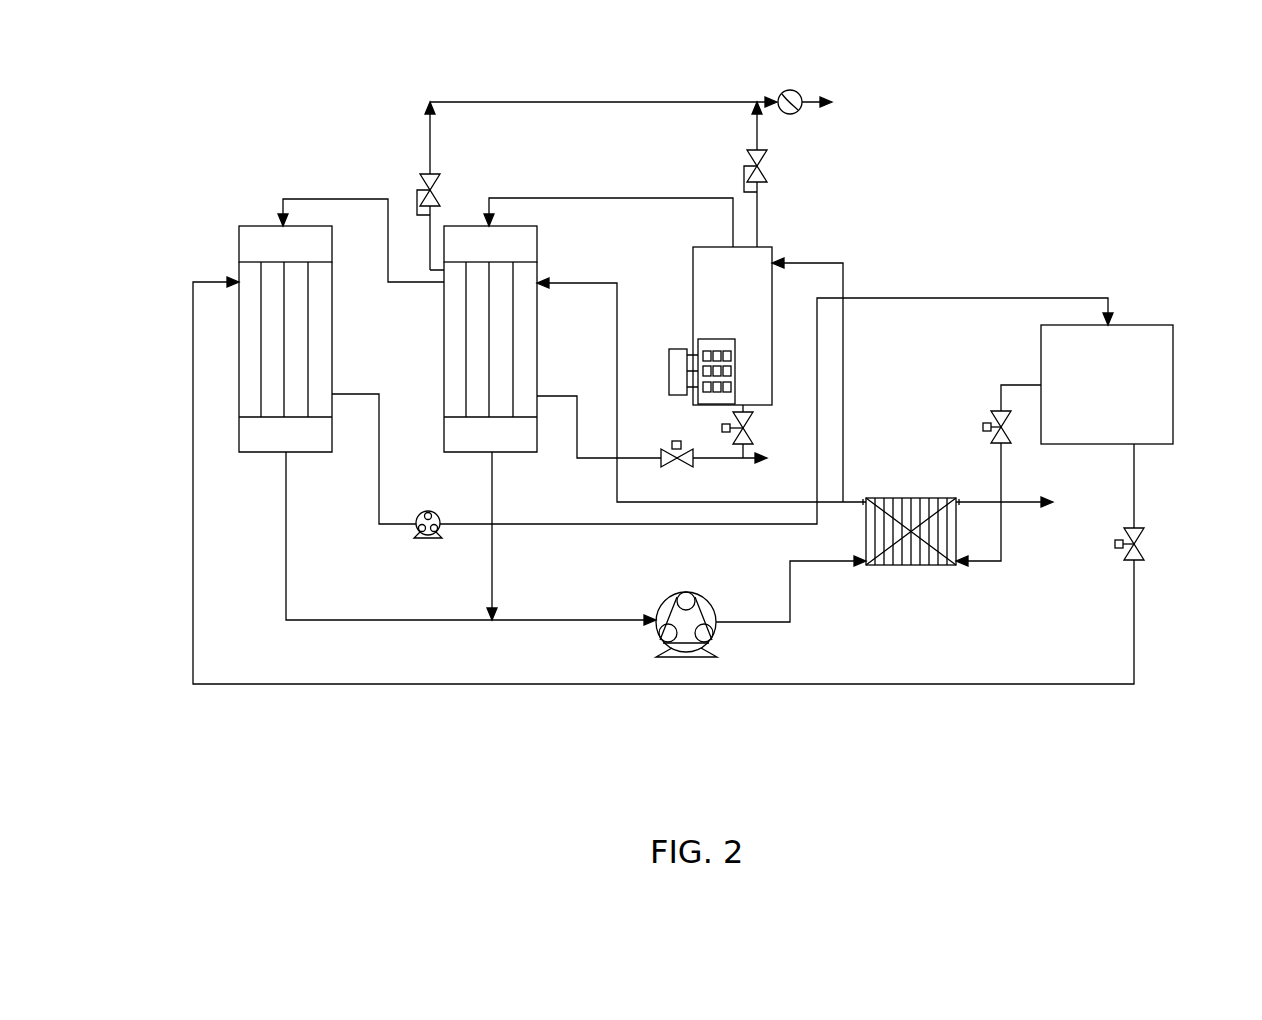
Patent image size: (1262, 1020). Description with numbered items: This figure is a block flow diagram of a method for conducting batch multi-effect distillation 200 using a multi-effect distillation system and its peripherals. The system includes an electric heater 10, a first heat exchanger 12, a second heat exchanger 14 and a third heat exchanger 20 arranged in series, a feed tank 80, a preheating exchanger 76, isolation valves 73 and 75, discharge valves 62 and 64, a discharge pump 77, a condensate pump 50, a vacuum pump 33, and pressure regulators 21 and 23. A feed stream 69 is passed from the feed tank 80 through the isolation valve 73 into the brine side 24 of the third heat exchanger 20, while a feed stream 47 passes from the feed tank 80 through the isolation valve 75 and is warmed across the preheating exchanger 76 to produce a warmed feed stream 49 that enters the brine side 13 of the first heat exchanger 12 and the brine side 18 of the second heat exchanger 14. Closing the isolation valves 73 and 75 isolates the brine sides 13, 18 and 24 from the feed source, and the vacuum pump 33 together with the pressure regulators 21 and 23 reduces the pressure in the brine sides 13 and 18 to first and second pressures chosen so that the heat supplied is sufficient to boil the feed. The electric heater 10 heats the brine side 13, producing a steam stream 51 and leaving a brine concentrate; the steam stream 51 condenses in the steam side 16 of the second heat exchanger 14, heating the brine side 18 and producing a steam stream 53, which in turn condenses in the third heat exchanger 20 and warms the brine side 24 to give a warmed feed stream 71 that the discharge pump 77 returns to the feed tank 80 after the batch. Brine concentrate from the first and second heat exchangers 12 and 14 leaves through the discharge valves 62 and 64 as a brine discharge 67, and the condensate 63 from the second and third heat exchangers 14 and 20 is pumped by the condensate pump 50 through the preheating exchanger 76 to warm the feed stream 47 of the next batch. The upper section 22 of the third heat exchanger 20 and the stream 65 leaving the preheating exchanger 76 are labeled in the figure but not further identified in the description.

The method for conducting batch multi-effect distillation 200 is at (212, 102).
The third heat exchanger 20 is at (289, 297).
The first vessel header 22 is at (250, 243).
The brine side of third heat exchanger 24 is at (318, 325).
The second heat exchanger 14 is at (485, 298).
The steam side of second heat exchanger 16 is at (530, 247).
The brine side of second heat exchanger 18 is at (458, 355).
The steam stream 53 is at (361, 227).
The pressure regulator 21 is at (428, 177).
The vacuum pump 33 is at (790, 114).
The steam stream 51 is at (608, 208).
The pressure regulator 23 is at (752, 153).
The first heat exchanger 12 is at (750, 294).
The brine side of first heat exchanger 13 is at (715, 267).
The electric heater 10 is at (680, 348).
The warmed feed stream 71 is at (722, 411).
The discharge pump 77 is at (428, 510).
The discharge valve 64 is at (667, 450).
The brine discharge 67 is at (780, 458).
The discharge valve 62 is at (750, 418).
The warmed feed stream 49 is at (905, 519).
The preheating exchanger 76 is at (947, 497).
The coolant outlet 65 is at (1023, 504).
The feed tank 80 is at (1140, 325).
The feed stream 47 is at (998, 462).
The isolation valve 75 is at (997, 410).
The condensate pump 50 is at (667, 598).
The condensate 63 is at (791, 589).
The feed stream 69 is at (663, 481).
The isolation valve 73 is at (1142, 530).